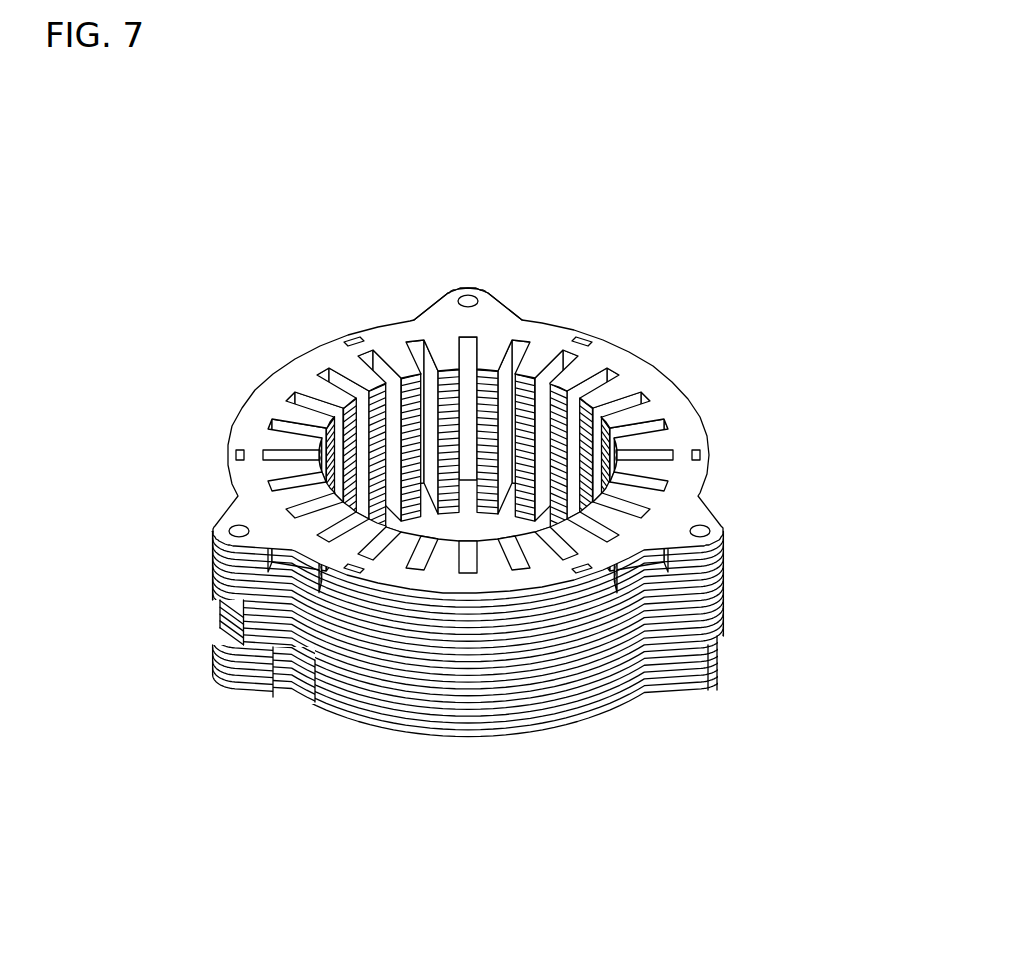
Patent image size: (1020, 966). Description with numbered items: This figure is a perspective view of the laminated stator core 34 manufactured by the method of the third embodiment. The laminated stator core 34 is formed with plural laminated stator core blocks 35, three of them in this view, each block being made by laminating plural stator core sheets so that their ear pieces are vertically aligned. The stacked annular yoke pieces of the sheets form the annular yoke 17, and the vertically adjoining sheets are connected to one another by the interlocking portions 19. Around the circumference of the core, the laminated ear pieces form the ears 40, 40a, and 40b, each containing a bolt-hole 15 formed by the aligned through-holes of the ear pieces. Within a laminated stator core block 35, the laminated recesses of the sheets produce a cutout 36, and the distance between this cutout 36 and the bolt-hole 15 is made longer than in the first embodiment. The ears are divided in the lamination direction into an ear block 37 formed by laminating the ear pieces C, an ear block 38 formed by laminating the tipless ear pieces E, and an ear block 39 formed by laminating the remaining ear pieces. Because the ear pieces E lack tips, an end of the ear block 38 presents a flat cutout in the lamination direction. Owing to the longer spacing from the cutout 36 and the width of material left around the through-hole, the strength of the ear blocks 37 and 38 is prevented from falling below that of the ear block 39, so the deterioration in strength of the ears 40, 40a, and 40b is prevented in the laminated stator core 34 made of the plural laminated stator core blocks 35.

The bolt-hole 15 is at (478, 291).
The annular yoke 17 is at (285, 390).
The interlocking portion 19 is at (352, 340).
The laminated stator core 34 is at (653, 320).
The laminated stator core block 35 is at (615, 758).
The cutout 36 is at (297, 706).
The ear block 37 is at (214, 690).
The ear block 38 is at (218, 600).
The ear block 39 is at (215, 537).
The ear 40 is at (245, 703).
The ear 40a is at (465, 286).
The ear 40b is at (733, 582).